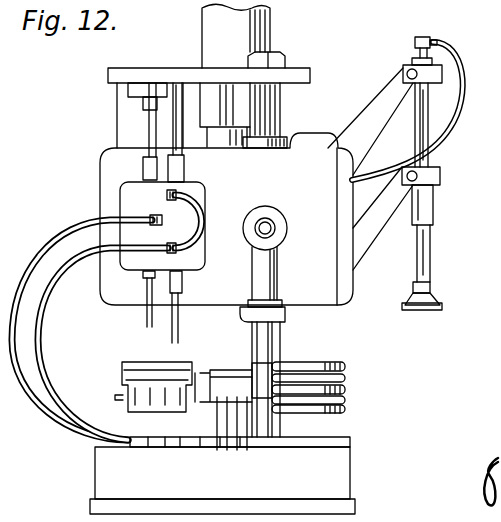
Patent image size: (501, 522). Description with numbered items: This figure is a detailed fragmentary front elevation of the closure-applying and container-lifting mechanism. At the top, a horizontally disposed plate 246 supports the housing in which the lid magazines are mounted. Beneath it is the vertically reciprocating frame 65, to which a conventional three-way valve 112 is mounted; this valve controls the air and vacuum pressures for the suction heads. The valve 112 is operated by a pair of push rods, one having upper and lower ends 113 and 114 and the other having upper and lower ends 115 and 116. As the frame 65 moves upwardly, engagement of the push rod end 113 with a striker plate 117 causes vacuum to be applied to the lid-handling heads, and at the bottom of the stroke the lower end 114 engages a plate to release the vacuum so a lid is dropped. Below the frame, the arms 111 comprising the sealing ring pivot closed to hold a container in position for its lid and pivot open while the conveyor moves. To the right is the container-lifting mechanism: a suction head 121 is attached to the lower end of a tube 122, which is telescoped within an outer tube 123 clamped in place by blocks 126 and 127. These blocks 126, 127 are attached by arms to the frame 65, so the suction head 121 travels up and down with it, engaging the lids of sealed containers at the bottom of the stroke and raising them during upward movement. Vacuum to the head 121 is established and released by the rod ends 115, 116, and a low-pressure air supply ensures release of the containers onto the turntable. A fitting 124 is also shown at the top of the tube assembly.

The horizontally disposed plate 246 is at (116, 70).
The striker plate 117 is at (159, 84).
The upper end of push rod 113 is at (150, 130).
The upper end of push rod 115 is at (185, 156).
The three-way valve 112 is at (125, 200).
The lower end of push rod 114 is at (147, 318).
The lower end of push rod 116 is at (183, 307).
The reciprocating frame 65 is at (332, 303).
The arms 111 is at (125, 378).
The fitting 124 is at (412, 60).
The block 126 is at (433, 76).
The outer tube 123 is at (412, 122).
The block 127 is at (440, 177).
The tube 122 is at (423, 268).
The suction head 121 is at (432, 308).